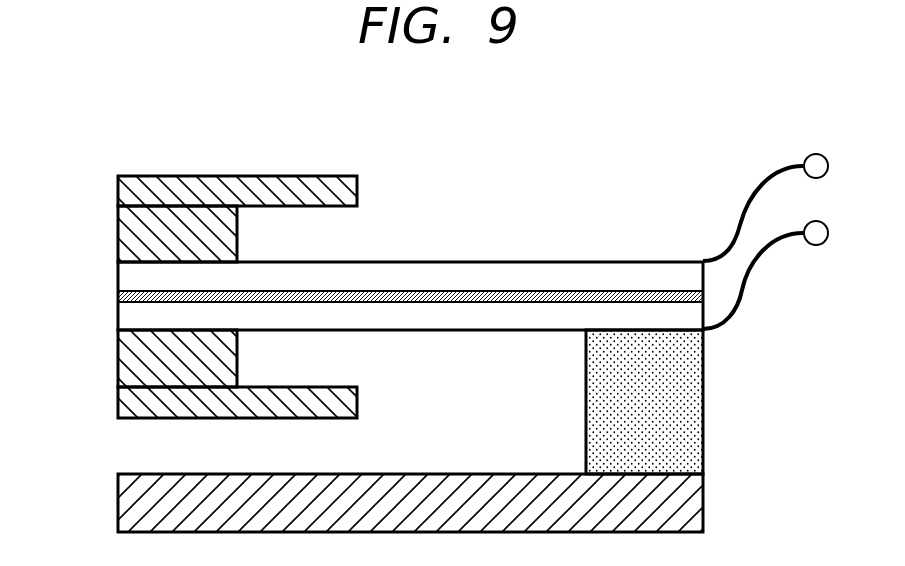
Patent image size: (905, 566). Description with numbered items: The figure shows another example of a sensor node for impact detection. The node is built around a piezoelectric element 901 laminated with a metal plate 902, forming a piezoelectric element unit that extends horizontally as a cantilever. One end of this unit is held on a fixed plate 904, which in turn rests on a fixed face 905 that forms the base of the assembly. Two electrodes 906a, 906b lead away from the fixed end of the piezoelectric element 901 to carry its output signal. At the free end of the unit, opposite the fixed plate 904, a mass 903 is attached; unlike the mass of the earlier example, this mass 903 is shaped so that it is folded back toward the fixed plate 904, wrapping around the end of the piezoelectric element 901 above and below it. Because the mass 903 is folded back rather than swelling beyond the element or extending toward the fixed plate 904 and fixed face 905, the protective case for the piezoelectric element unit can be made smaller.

The piezoelectric element 901 is at (472, 270).
The metal plate 902 is at (118, 296).
The mass 903 is at (122, 235).
The fixed plate 904 is at (690, 403).
The fixed face 905 is at (697, 503).
The electrode 906a is at (815, 153).
The electrode 906b is at (818, 245).